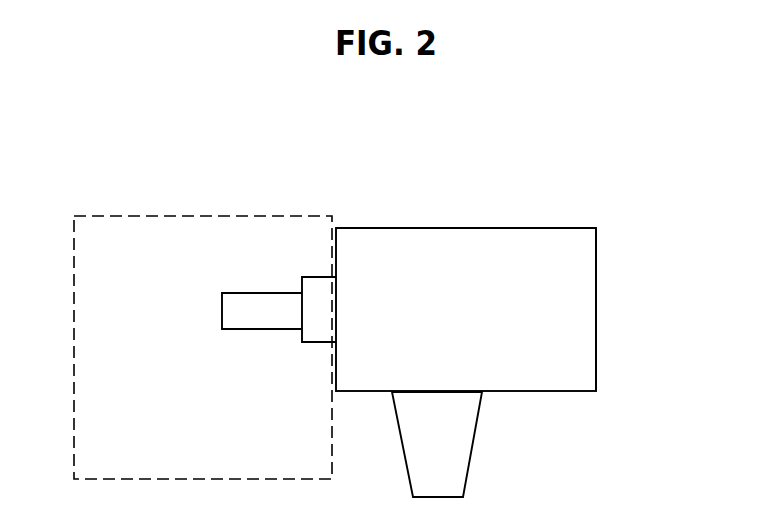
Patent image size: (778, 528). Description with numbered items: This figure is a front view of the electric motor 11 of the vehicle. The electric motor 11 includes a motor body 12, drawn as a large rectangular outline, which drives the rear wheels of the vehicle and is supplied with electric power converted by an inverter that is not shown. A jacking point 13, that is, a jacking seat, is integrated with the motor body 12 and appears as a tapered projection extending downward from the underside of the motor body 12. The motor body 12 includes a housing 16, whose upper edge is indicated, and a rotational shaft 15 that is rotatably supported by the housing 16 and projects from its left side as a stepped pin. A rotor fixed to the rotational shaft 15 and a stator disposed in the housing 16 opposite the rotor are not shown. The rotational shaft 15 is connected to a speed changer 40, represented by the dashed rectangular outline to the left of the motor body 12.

The electric motor 11 is at (604, 231).
The motor body 12 is at (599, 299).
The jacking point 13 is at (458, 443).
The rotational shaft 15 is at (263, 303).
The housing 16 is at (517, 227).
The speed changer 40 is at (143, 206).